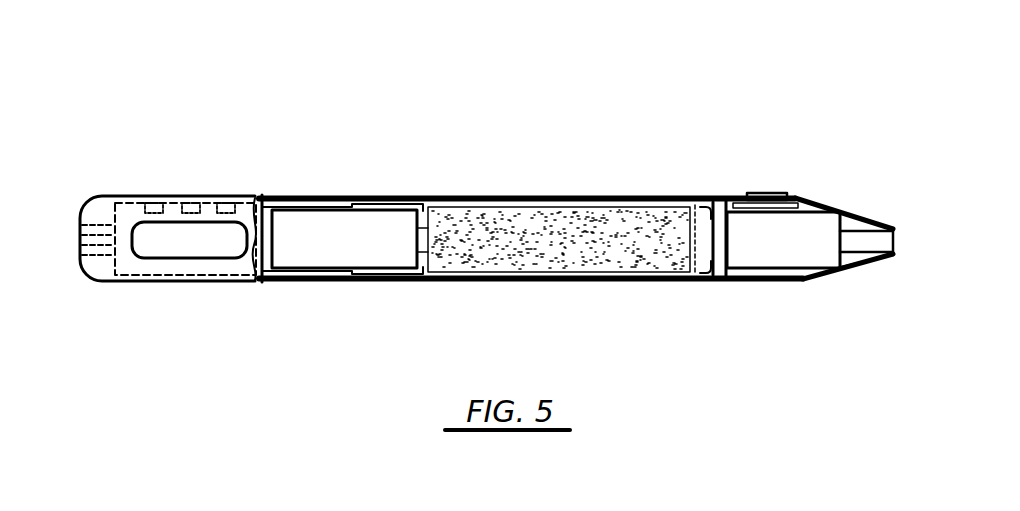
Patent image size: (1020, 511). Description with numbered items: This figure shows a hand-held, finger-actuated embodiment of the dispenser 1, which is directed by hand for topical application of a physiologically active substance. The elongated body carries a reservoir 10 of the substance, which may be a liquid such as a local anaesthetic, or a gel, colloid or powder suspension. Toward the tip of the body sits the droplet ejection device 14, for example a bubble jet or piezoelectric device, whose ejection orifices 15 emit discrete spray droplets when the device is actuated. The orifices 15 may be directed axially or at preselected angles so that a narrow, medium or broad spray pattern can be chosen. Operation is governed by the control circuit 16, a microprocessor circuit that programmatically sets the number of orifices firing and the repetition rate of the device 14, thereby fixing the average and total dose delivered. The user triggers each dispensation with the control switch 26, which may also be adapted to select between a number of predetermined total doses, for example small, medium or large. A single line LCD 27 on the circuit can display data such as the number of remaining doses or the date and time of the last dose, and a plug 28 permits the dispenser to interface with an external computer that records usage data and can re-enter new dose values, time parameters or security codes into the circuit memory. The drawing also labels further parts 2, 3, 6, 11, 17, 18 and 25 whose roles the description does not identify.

The dispenser 1 is at (487, 172).
The barrel 2 is at (625, 197).
The cap 3 is at (120, 195).
The housing body 6 is at (326, 284).
The reservoir 10 is at (490, 266).
The retaining hooks 11 is at (712, 205).
The droplet ejection device 14 is at (790, 263).
The ejection orifices 15 is at (850, 258).
The control circuit 16 is at (142, 266).
The battery 17 is at (362, 225).
The switch button 18 is at (776, 193).
The writing tip 25 is at (896, 229).
The control switch 26 is at (227, 197).
The LCD 27 is at (217, 244).
The plug 28 is at (82, 243).